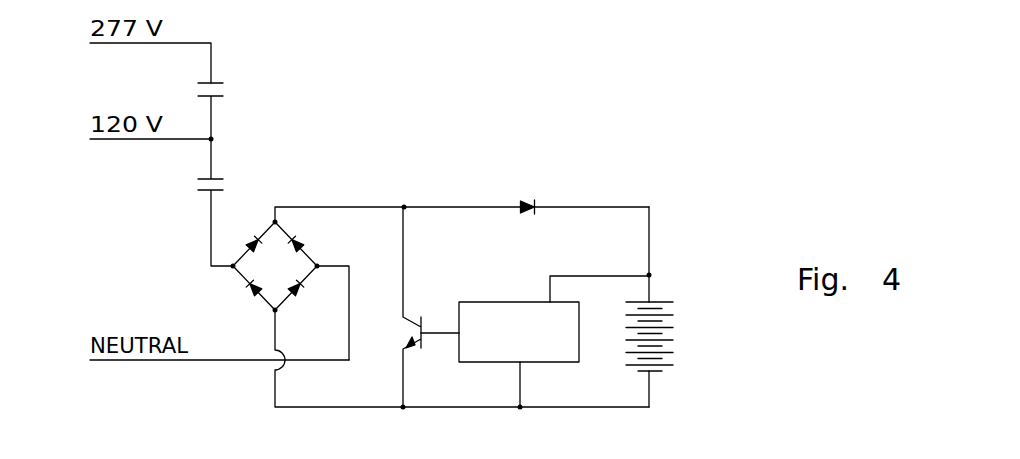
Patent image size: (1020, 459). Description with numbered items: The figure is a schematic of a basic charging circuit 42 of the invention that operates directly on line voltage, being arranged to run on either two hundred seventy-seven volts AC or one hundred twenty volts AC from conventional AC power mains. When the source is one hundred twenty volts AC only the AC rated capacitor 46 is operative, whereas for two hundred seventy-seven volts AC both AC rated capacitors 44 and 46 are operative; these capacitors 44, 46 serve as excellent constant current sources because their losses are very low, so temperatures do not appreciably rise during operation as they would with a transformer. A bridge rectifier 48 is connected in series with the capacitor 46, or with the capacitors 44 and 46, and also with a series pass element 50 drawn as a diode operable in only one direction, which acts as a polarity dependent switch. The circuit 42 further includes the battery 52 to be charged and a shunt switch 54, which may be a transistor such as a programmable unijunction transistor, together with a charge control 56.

The charging circuit 42 is at (424, 158).
The AC rated capacitor 44 is at (237, 66).
The AC rated capacitor 46 is at (237, 160).
The bridge rectifier 48 is at (321, 245).
The series pass element 50 is at (539, 182).
The battery 52 is at (677, 284).
The shunt switch 54 is at (418, 296).
The charge control 56 is at (561, 363).